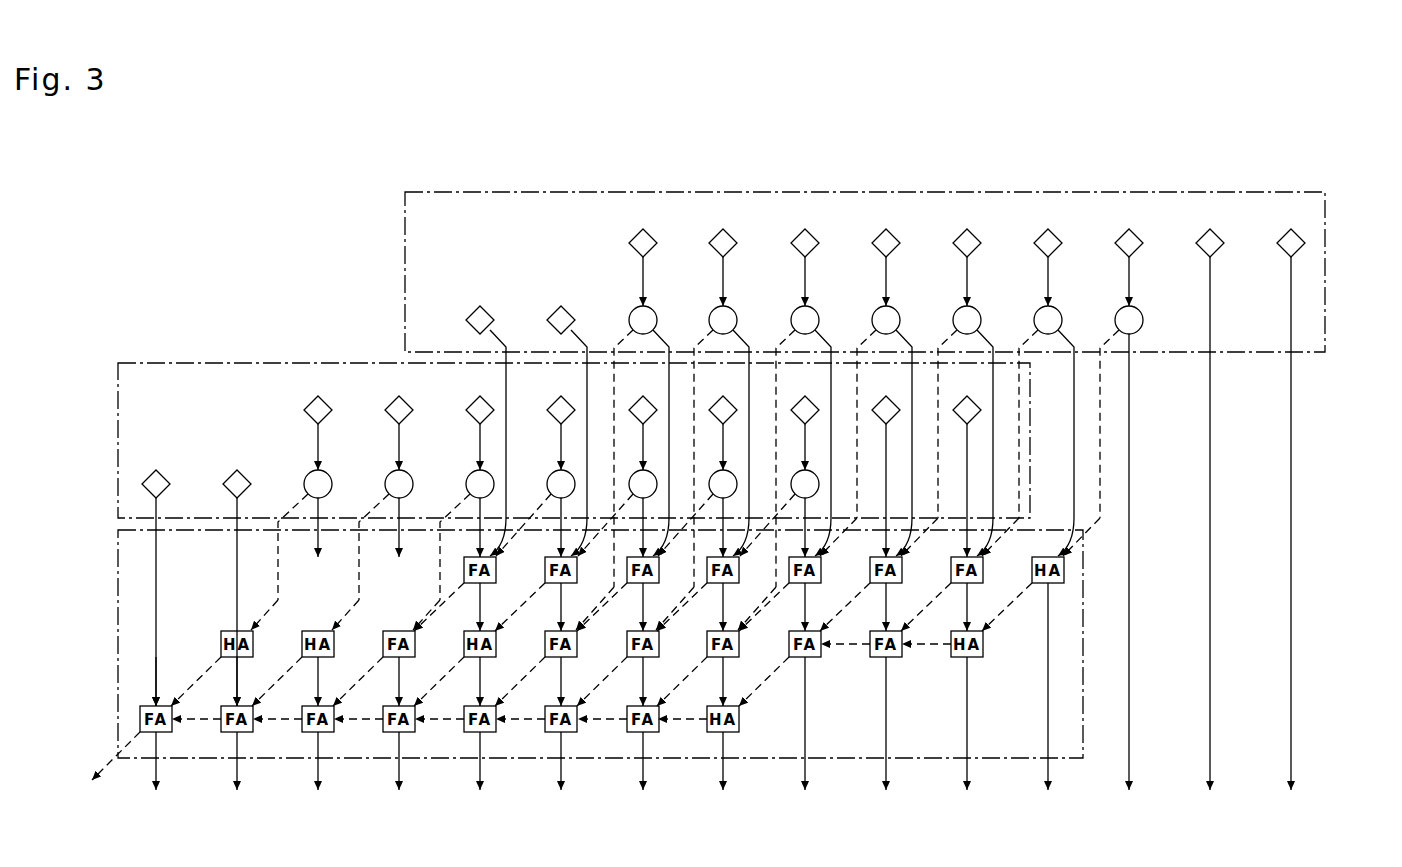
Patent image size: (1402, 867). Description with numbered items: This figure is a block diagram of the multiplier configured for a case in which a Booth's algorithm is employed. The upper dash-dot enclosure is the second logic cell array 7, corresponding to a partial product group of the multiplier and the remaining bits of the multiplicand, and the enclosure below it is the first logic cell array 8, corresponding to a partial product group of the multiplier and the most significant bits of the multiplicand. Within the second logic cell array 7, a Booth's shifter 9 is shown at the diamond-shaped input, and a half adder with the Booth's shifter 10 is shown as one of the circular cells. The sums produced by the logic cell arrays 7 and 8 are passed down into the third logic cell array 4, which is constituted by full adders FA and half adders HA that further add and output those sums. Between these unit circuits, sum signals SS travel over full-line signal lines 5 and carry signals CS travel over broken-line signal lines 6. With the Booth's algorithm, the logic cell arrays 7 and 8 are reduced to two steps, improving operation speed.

The third logic cell array 4 is at (118, 574).
The signal line for sum signals 5 is at (643, 290).
The signal line for carry signals 6 is at (615, 336).
The second logic cell array 7 is at (405, 252).
The first logic cell array 8 is at (188, 362).
The Booth's shifter 9 is at (1305, 243).
The half adder with Booth's shifter 10 is at (1143, 320).